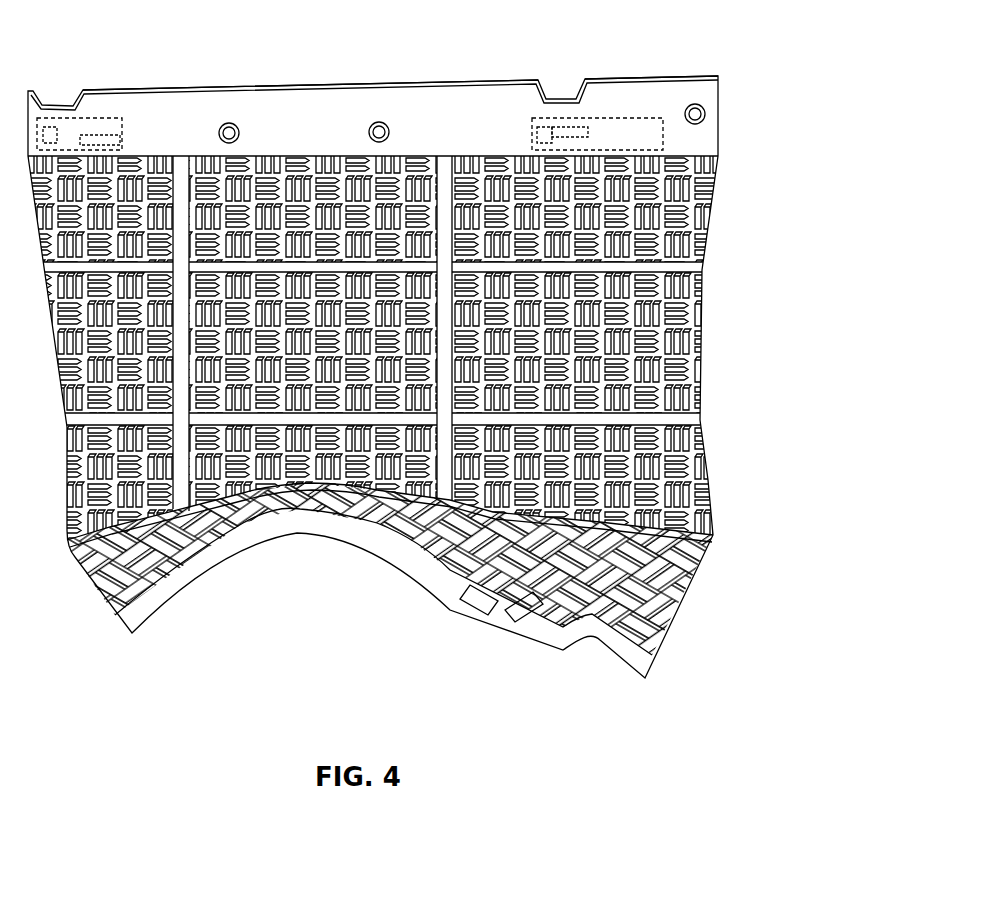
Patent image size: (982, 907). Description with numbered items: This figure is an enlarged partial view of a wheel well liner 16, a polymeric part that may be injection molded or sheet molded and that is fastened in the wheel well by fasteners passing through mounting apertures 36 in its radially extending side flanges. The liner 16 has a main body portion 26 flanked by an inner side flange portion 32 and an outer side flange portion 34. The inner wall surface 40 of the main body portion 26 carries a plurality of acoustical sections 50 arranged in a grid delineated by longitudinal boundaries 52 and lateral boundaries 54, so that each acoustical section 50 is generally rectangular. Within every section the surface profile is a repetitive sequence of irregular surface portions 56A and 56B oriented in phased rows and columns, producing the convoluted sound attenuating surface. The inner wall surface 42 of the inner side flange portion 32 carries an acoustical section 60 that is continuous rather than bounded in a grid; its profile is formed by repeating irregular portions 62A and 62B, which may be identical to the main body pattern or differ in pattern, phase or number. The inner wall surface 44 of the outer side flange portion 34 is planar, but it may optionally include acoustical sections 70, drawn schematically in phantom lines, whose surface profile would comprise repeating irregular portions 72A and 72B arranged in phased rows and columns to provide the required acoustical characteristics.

The liner 16 is at (740, 190).
The main body portion 26 is at (703, 323).
The inner side flange portion 32 is at (426, 565).
The outer side flange portion 34 is at (636, 78).
The mounting apertures 36 is at (695, 104).
The inner wall surface 40 is at (687, 390).
The inner wall surface 42 is at (415, 592).
The inner wall surface 44 is at (446, 98).
The acoustical sections 50 is at (337, 362).
The longitudinal boundaries 52 is at (697, 266).
The lateral boundaries 54 is at (178, 178).
The irregular surface portions 56A is at (346, 480).
The irregular surface portions 56B is at (307, 478).
The acoustical section 60 is at (571, 612).
The irregular portions 62A is at (483, 600).
The irregular portions 62B is at (520, 606).
The acoustical sections 70 is at (70, 130).
The irregular portions 72A is at (52, 127).
The irregular portions 72B is at (95, 135).